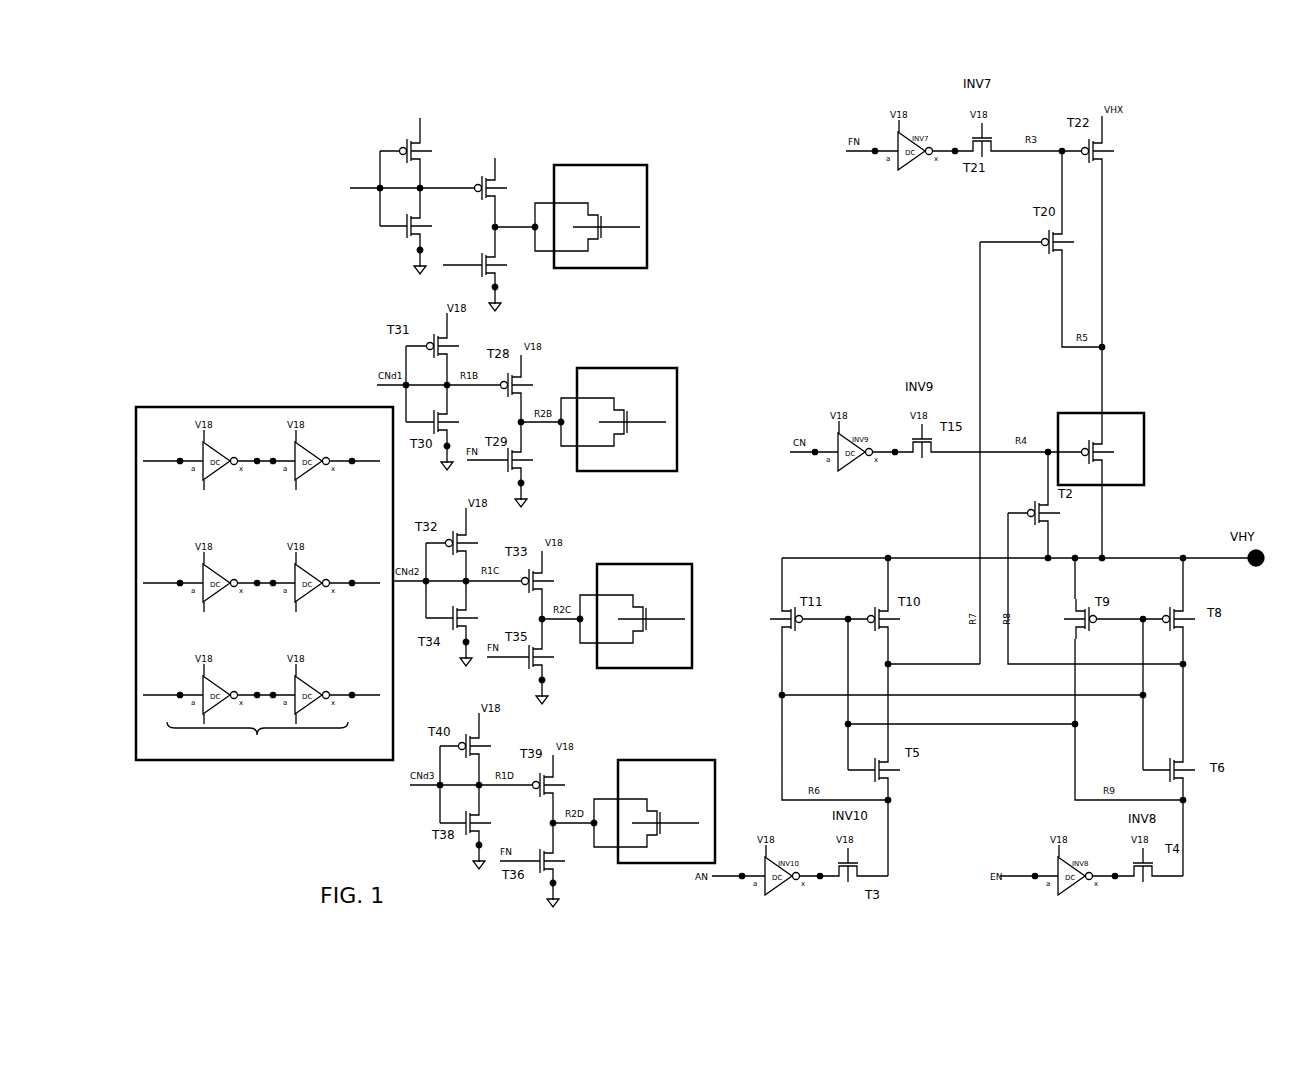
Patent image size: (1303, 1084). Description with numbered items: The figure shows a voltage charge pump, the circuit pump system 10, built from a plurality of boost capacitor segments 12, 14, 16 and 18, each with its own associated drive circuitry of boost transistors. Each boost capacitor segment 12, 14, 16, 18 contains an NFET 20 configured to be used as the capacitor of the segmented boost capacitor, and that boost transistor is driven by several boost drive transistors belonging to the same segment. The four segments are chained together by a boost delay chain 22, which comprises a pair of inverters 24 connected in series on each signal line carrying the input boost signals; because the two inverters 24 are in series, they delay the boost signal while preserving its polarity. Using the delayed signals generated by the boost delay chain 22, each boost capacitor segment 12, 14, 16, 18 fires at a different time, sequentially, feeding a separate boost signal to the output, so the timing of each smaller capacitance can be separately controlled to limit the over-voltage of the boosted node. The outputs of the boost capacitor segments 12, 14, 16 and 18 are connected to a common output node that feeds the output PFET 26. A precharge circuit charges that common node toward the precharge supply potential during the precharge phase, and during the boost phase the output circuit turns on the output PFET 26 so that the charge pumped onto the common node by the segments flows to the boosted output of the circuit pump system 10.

The circuit pump system 10 is at (348, 259).
The boost capacitor segment 12 is at (648, 262).
The boost capacitor segment 14 is at (618, 471).
The boost capacitor segment 16 is at (657, 668).
The boost capacitor segment 18 is at (648, 863).
The NFET 20 is at (633, 205).
The boost delay chain 22 is at (212, 407).
The pair of inverters 24 is at (230, 737).
The output PFET 26 is at (1172, 465).